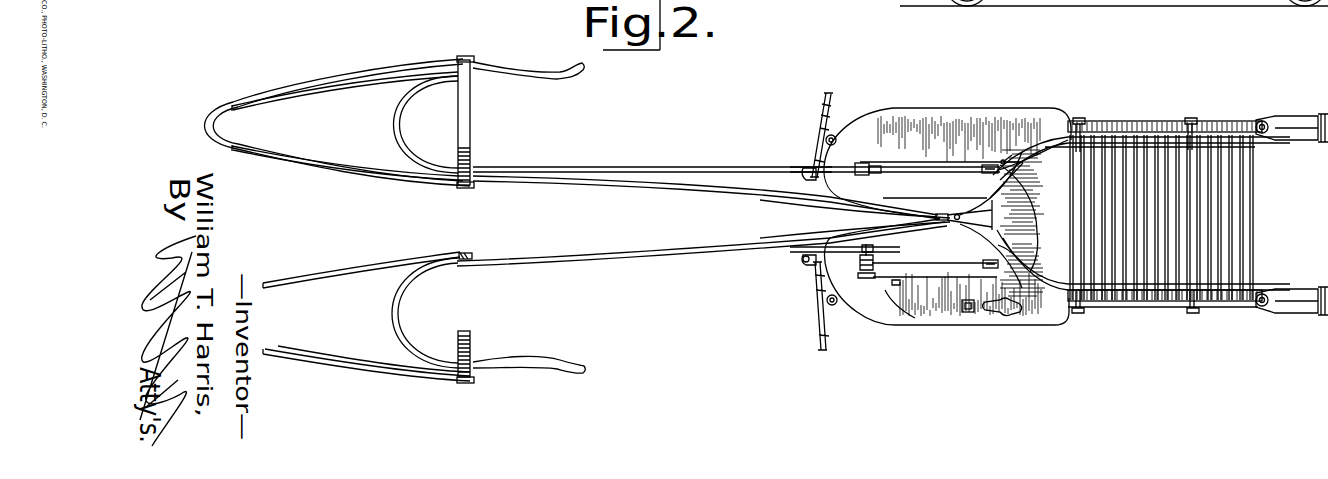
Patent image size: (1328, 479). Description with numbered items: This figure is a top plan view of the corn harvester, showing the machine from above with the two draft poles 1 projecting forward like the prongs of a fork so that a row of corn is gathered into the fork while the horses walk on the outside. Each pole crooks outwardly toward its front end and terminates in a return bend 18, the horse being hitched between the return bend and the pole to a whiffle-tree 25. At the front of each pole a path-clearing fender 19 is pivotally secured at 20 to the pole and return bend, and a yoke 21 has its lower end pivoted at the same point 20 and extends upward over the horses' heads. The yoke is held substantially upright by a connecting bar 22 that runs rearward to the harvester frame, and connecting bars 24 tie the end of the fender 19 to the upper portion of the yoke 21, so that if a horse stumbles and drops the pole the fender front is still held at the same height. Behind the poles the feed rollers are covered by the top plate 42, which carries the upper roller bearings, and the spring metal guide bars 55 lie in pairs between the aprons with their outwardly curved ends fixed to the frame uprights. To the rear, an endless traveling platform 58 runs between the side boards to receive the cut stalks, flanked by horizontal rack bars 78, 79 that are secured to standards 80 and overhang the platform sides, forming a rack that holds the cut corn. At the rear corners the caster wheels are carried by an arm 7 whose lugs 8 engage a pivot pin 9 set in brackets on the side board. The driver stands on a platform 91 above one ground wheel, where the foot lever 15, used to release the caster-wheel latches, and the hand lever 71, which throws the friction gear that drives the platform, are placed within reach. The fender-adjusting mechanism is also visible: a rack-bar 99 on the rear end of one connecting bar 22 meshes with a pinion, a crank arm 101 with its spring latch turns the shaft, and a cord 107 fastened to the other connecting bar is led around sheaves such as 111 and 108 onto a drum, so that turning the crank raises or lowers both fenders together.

The pole 1 is at (688, 180).
The arm 7 is at (1283, 116).
The lug 8 is at (1260, 307).
The pivot pin 9 is at (1262, 121).
The foot lever 15 is at (993, 306).
The return bend 18 is at (527, 70).
The fender 19 is at (342, 70).
The pivot 20 is at (460, 57).
The yoke 21 is at (470, 125).
The connecting bar 22 is at (772, 168).
The connecting bar 24 is at (337, 88).
The whiffle-tree 25 is at (833, 100).
The top plate 42 is at (895, 176).
The spring metal guide bar 55 is at (853, 208).
The endless traveling platform 58 is at (1258, 212).
The lever 71 is at (967, 312).
The rack bar 78 is at (1215, 128).
The rack bar 79 is at (1288, 146).
The standard 80 is at (1082, 122).
The platform 91 is at (908, 313).
The rack-bar 99 is at (898, 249).
The crank arm 101 is at (884, 281).
The cord 107 is at (915, 167).
The sheave 108 is at (990, 259).
The sheave 111 is at (990, 173).